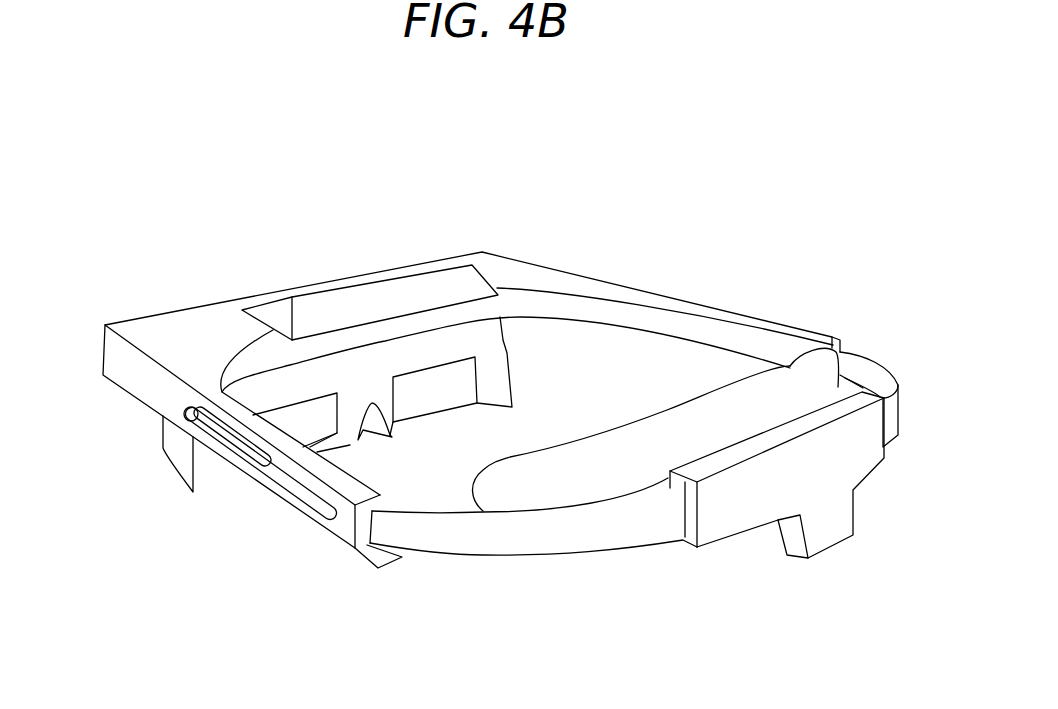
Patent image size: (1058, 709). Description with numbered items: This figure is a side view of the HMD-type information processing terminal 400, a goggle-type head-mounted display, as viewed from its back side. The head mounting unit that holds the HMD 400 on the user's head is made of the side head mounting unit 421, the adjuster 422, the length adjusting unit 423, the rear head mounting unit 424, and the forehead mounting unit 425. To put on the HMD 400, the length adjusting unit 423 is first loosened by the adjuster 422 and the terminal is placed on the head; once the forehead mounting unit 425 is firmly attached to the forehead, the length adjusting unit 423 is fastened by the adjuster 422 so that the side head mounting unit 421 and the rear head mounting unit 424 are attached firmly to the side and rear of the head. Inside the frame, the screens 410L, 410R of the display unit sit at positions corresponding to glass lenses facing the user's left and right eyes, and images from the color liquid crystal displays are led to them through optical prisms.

The HMD-type information processing terminal 400 is at (455, 227).
The screen for the left eye 410L is at (318, 425).
The screen for the right eye 410R is at (438, 392).
The side head mounting unit 421 is at (144, 392).
The adjuster 422 is at (215, 447).
The length adjusting unit 423 is at (485, 543).
The rear head mounting unit 424 is at (685, 428).
The forehead mounting unit 425 is at (340, 300).